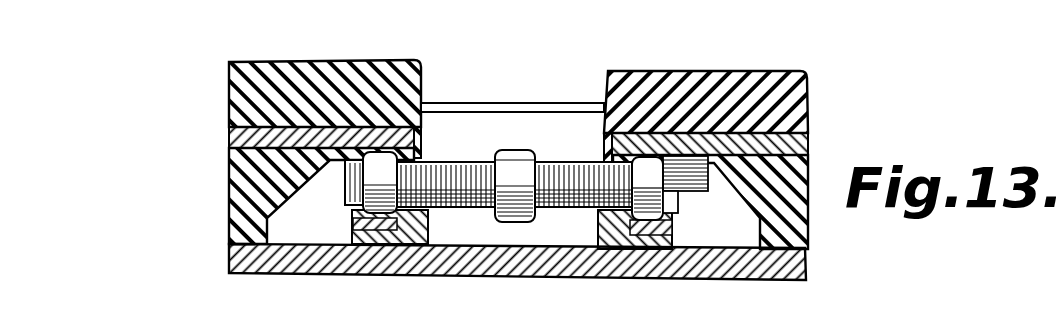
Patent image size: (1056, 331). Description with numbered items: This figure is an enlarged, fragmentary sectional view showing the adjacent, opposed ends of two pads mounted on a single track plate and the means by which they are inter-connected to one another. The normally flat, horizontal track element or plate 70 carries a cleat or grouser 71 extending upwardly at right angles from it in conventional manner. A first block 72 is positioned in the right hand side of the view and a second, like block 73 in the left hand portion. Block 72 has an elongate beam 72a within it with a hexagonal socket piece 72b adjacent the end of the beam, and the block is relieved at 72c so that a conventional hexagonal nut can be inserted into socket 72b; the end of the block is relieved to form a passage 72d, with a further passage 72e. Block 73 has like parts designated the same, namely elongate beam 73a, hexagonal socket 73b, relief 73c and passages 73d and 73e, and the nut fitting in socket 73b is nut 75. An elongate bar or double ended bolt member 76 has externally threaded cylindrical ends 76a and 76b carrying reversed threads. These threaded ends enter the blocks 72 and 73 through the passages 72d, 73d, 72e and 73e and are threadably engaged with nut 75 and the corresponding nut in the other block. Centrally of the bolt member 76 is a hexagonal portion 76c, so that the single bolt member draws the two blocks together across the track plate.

The track element or plate 70 is at (552, 263).
The cleat or grouser 71 is at (498, 113).
The first block 72 is at (758, 82).
The elongate beam 72a is at (809, 121).
The hexagonal socket piece 72b is at (645, 250).
The relief 72c is at (760, 221).
The passage 72d is at (588, 162).
The passage 72e is at (640, 157).
The second block 73 is at (313, 75).
The elongate beam 73a is at (232, 142).
The hexagonal socket piece 73b is at (402, 247).
The relief 73c is at (267, 228).
The passage 73d is at (443, 165).
The passage 73e is at (422, 146).
The nut 75 is at (373, 173).
The double ended bolt member 76 is at (321, 217).
The externally threaded cylindrical end 76a is at (455, 208).
The externally threaded cylindrical end 76b is at (557, 167).
The hexagonal portion 76c is at (515, 218).